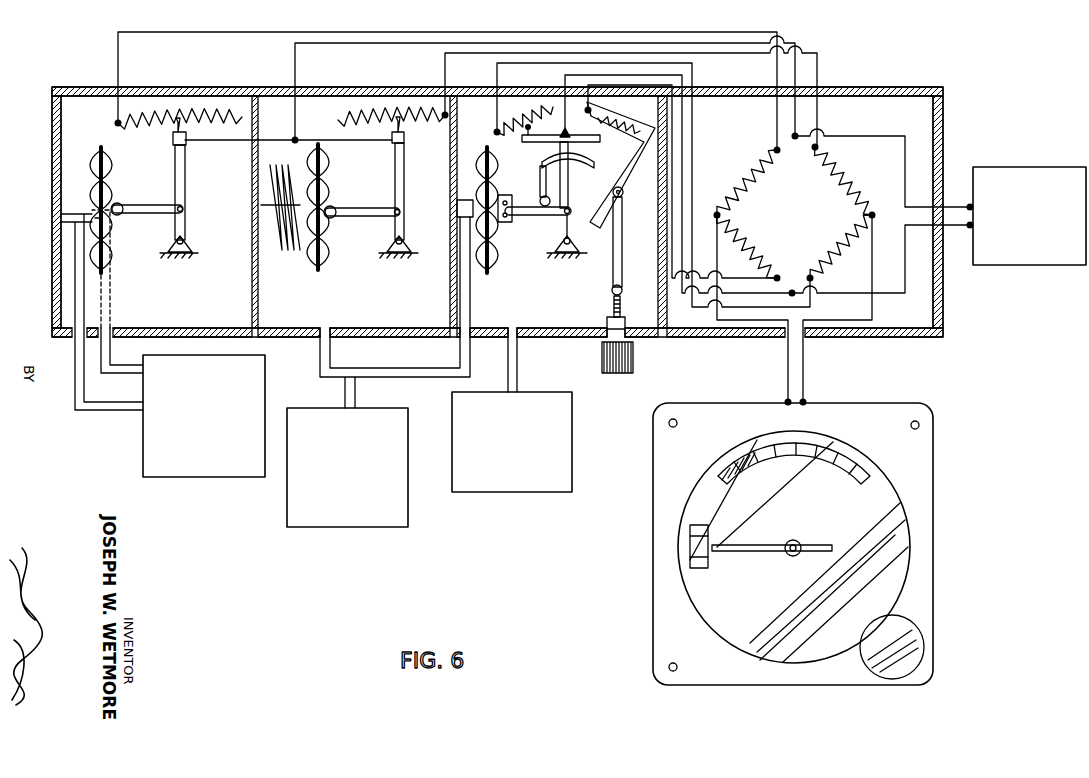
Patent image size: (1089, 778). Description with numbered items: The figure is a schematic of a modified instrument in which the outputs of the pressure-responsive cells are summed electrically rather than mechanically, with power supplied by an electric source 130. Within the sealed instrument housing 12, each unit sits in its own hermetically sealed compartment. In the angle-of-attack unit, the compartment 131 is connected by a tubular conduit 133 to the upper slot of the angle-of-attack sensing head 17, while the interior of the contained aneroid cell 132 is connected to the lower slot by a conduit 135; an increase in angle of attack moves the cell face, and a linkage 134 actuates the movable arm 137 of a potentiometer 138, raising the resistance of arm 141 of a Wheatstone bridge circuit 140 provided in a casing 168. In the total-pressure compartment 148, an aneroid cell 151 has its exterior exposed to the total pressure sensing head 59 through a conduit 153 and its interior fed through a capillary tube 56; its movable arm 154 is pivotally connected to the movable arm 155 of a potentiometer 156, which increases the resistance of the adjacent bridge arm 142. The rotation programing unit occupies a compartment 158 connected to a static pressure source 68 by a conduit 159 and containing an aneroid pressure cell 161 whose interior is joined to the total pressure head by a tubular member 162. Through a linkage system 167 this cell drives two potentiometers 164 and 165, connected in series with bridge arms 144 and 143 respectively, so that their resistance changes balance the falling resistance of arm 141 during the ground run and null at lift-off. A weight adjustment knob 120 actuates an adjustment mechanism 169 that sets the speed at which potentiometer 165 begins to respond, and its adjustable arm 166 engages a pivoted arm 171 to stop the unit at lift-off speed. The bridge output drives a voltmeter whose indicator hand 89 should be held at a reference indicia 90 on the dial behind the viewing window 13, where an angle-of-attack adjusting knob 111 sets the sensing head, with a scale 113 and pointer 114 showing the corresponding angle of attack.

The instrument housing 12 is at (72, 88).
The compartment 131 is at (53, 318).
The total-pressure-responsive-unit compartment 148 is at (306, 337).
The casing 168 is at (910, 338).
The potentiometer 138 is at (179, 118).
The aneroid cell 132 is at (111, 252).
The linkage 134 is at (127, 213).
The movable arm 137 is at (186, 178).
The conduit 135 is at (101, 411).
The tubular conduit 133 is at (135, 370).
The potentiometer 156 is at (394, 116).
The capillary tube 56 is at (296, 170).
The aneroid cell 151 is at (326, 262).
The movable arm 154 is at (372, 205).
The movable arm 155 is at (404, 180).
The conduit 153 is at (330, 355).
The tubular member 162 is at (460, 355).
The aneroid pressure cell 161 is at (493, 262).
The linkage system 167 is at (534, 226).
The potentiometer 164 is at (528, 124).
The pivoted arm 171 is at (542, 173).
The adjustable arm 166 is at (633, 160).
The potentiometer 165 is at (639, 126).
The adjustment mechanism 169 is at (622, 233).
The compartment 158 is at (552, 340).
The weight adjustment knob 120 is at (634, 357).
The conduit 159 is at (517, 376).
The bridge arm 141 is at (745, 178).
The bridge arm 142 is at (848, 178).
The bridge arm 143 is at (760, 258).
The bridge arm 144 is at (820, 258).
The Wheatstone bridge circuit 140 is at (812, 223).
The angle-of-attack sensing head 17 is at (240, 478).
The total pressure sensing head 59 is at (370, 528).
The static pressure source 68 is at (530, 492).
The electric power source 130 is at (1026, 167).
The viewing window 13 is at (795, 544).
The angle-of-attack adjusting knob 111 is at (917, 637).
The scale 113 is at (770, 447).
The cursor or pointer 114 is at (752, 447).
The indicator hand 89 is at (758, 552).
The reference indicia 90 is at (690, 548).